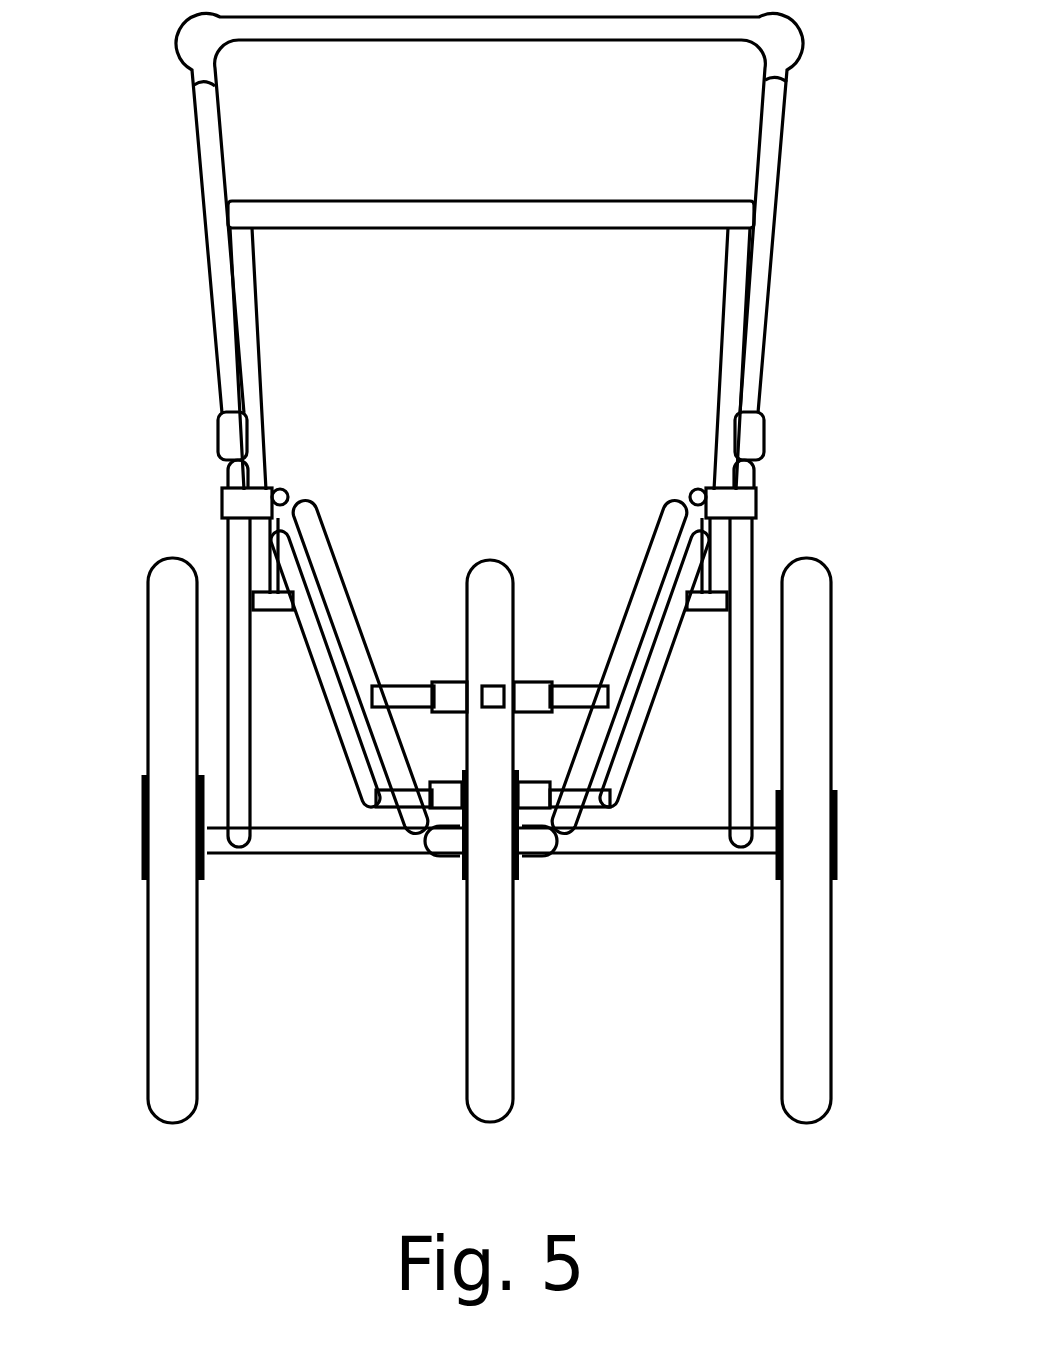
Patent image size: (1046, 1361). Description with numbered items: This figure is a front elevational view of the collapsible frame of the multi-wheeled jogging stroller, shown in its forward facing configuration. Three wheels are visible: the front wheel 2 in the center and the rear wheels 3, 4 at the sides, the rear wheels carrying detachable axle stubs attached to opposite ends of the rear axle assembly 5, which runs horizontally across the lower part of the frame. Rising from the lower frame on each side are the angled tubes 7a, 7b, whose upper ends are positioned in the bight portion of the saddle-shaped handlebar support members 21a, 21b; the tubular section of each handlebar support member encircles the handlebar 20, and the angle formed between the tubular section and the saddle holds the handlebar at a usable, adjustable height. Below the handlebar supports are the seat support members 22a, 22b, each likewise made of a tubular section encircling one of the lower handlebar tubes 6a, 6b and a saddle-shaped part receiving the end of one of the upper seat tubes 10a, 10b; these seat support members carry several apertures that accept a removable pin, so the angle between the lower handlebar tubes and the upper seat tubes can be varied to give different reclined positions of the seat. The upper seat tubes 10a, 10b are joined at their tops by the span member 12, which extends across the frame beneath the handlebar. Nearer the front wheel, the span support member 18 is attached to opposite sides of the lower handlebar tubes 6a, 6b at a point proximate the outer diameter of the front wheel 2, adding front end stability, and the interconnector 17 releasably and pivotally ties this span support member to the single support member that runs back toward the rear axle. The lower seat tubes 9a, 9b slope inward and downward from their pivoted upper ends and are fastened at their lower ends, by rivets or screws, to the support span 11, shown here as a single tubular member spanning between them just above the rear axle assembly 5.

The front wheel 2 is at (485, 1095).
The rear wheel 3 is at (802, 1092).
The rear wheel 4 is at (165, 1100).
The rear axle assembly 5 is at (314, 850).
The lower handlebar tube 6a is at (407, 797).
The lower handlebar tube 6b is at (563, 857).
The angled tube 7a is at (233, 760).
The angled tube 7b is at (738, 747).
The lower seat tube 9a is at (358, 750).
The lower seat tube 9b is at (617, 770).
The upper seat tube 10a is at (258, 303).
The upper seat tube 10b is at (732, 298).
The support span 11 is at (583, 800).
The span member 12 is at (317, 213).
The interconnector 17 is at (527, 690).
The span support member 18 is at (582, 693).
The handlebar 20 is at (333, 22).
The handlebar support member 21a is at (232, 437).
The handlebar support member 21b is at (763, 423).
The seat support member 22a is at (270, 528).
The seat support member 22b is at (717, 523).